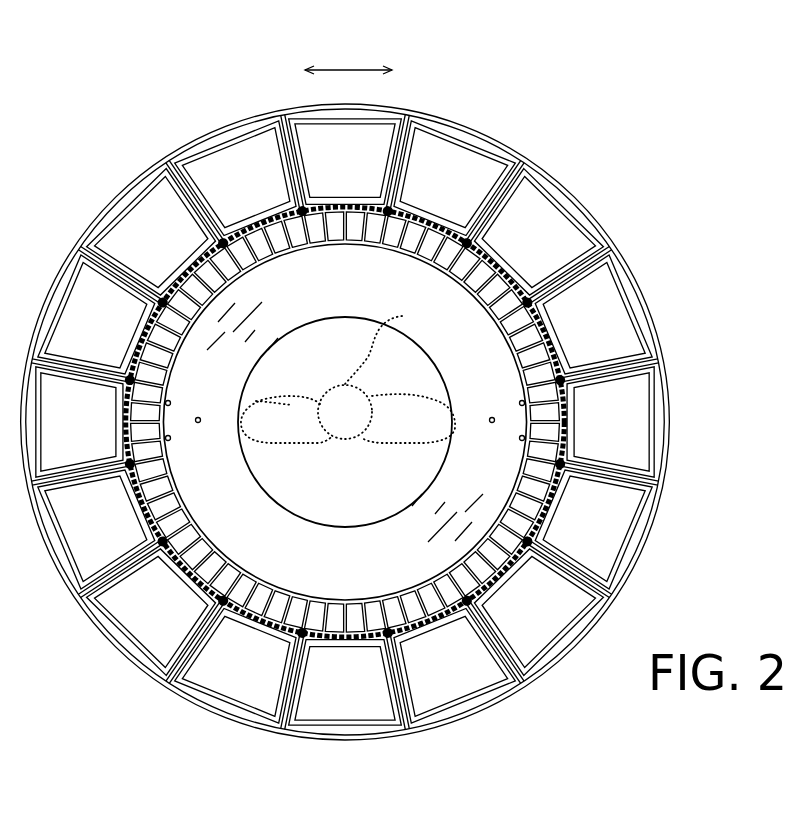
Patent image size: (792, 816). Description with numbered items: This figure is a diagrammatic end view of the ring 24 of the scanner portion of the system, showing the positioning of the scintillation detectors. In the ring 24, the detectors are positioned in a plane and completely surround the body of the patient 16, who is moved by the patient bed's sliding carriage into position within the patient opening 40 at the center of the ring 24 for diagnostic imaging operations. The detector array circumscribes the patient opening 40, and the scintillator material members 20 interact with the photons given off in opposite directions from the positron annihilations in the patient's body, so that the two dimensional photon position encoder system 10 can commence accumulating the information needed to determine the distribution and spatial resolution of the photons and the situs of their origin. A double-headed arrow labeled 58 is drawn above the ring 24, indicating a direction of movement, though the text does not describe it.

The two dimensional photon position encoder system 10 is at (298, 249).
The patient 16 is at (348, 376).
The scintillator material members 20 is at (449, 250).
The ring 24 is at (505, 122).
The patient opening 40 is at (298, 486).
The direction of movement arrow 58 is at (345, 68).